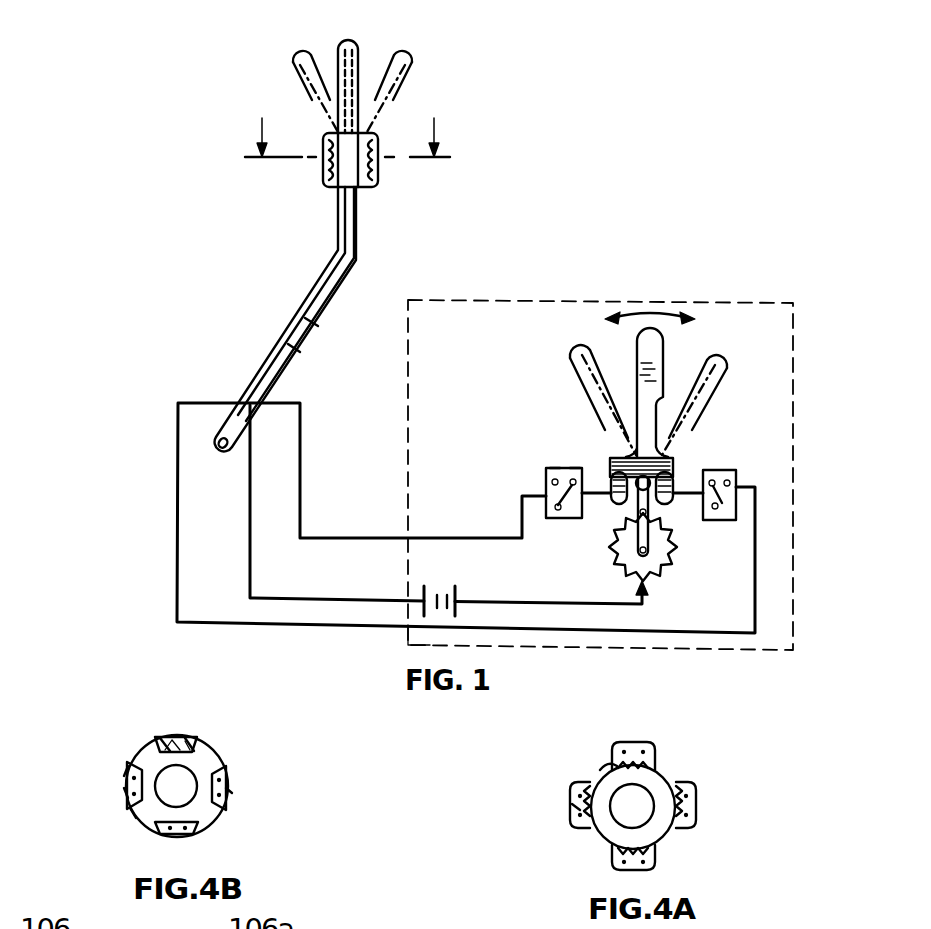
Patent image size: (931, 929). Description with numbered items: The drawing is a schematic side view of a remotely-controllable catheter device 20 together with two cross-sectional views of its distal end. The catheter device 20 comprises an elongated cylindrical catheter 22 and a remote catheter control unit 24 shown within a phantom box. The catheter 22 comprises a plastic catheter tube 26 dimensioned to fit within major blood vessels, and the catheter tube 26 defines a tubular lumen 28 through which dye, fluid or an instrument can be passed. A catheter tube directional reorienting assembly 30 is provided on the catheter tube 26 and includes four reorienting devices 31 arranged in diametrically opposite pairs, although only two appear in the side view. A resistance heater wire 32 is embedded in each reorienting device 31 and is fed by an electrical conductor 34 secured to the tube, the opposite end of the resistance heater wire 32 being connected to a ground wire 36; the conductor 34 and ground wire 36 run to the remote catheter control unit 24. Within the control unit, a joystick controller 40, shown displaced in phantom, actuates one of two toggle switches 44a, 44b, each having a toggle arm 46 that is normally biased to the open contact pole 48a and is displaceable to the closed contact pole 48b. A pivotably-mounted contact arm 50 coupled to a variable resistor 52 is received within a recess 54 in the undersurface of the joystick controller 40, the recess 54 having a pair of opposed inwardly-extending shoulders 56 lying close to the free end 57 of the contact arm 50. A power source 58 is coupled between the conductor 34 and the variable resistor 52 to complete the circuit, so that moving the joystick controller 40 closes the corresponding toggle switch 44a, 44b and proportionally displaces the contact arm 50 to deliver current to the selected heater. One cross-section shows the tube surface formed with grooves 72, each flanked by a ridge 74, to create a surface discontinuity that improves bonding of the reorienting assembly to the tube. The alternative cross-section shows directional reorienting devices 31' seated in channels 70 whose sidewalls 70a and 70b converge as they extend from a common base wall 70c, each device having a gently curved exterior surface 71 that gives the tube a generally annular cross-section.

In FIG. 1, the catheter device 20 is at (648, 175).
In FIG. 1, the catheter 22 is at (420, 36).
In FIG. 4B, the catheter 22 is at (112, 756).
In FIG. 4A, the catheter 22 is at (747, 758).
In FIG. 1, the remote catheter control unit 24 is at (793, 405).
In FIG. 1, the catheter tube 26 is at (357, 66).
In FIG. 4B, the catheter tube 26 is at (145, 758).
In FIG. 4A, the catheter tube 26 is at (664, 786).
In FIG. 1, the tubular lumen 28 is at (345, 45).
In FIG. 4B, the tubular lumen 28 is at (185, 783).
In FIG. 4A, the tubular lumen 28 is at (632, 808).
In FIG. 1, the catheter tube directional reorienting assembly 30 is at (372, 200).
In FIG. 1, the reorienting device 31 is at (350, 176).
In FIG. 4A, the reorienting device 31 is at (640, 785).
In FIG. 4B, the directional reorienting device 31' is at (222, 772).
In FIG. 1, the resistance heater wire 32 is at (376, 134).
In FIG. 4B, the resistance heater wire 32 is at (183, 736).
In FIG. 4A, the resistance heater wire 32 is at (638, 748).
In FIG. 1, the electrical conductor 34 is at (312, 312).
In FIG. 1, the ground wire 36 is at (292, 352).
In FIG. 1, the joystick controller 40 is at (545, 358).
In FIG. 1, the toggle switch 44a is at (546, 478).
In FIG. 1, the toggle switch 44b is at (737, 472).
In FIG. 1, the toggle arm 46 is at (546, 496).
In FIG. 1, the contact pole 48a is at (555, 470).
In FIG. 1, the contact pole 48b is at (556, 470).
In FIG. 1, the contact arm 50 is at (638, 505).
In FIG. 1, the variable resistor 52 is at (668, 575).
In FIG. 1, the recess 54 is at (615, 472).
In FIG. 1, the shoulder 56 is at (688, 472).
In FIG. 1, the free end 57 is at (672, 465).
In FIG. 1, the power source 58 is at (458, 590).
In FIG. 4B, the channel 70 is at (200, 740).
In FIG. 4B, the channel sidewall 70a is at (130, 765).
In FIG. 4B, the channel sidewall 70b is at (132, 810).
In FIG. 4B, the base wall 70c is at (125, 790).
In FIG. 4B, the exterior surface 71 is at (232, 793).
In FIG. 4A, the groove 72 is at (607, 770).
In FIG. 4A, the ridge 74 is at (575, 808).